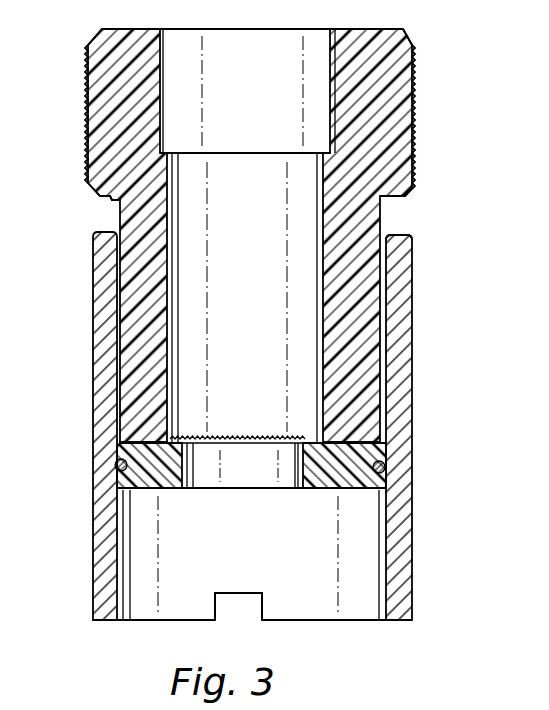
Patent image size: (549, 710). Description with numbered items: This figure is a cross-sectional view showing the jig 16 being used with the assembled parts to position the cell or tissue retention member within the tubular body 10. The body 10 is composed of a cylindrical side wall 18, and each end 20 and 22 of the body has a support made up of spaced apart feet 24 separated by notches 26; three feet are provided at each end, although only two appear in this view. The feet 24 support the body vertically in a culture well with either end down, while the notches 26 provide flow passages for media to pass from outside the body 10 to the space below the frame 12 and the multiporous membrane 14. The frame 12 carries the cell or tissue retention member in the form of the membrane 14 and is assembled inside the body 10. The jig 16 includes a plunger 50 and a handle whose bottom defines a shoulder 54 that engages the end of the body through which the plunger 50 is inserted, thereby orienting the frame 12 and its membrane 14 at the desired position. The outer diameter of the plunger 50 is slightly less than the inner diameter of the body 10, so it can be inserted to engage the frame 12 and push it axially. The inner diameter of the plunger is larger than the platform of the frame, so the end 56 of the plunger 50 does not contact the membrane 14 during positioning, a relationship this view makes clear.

The tubular body 10 is at (412, 389).
The frame 12 is at (350, 491).
The multiporous membrane 14 is at (255, 437).
The jig 16 is at (413, 133).
The cylindrical side wall 18 is at (412, 288).
The end of the body 20 is at (393, 624).
The end of the body 22 is at (396, 237).
The feet 24 is at (162, 626).
The notches 26 is at (242, 598).
The plunger 50 is at (120, 273).
The shoulder 54 is at (110, 197).
The end of the plunger 56 is at (116, 458).